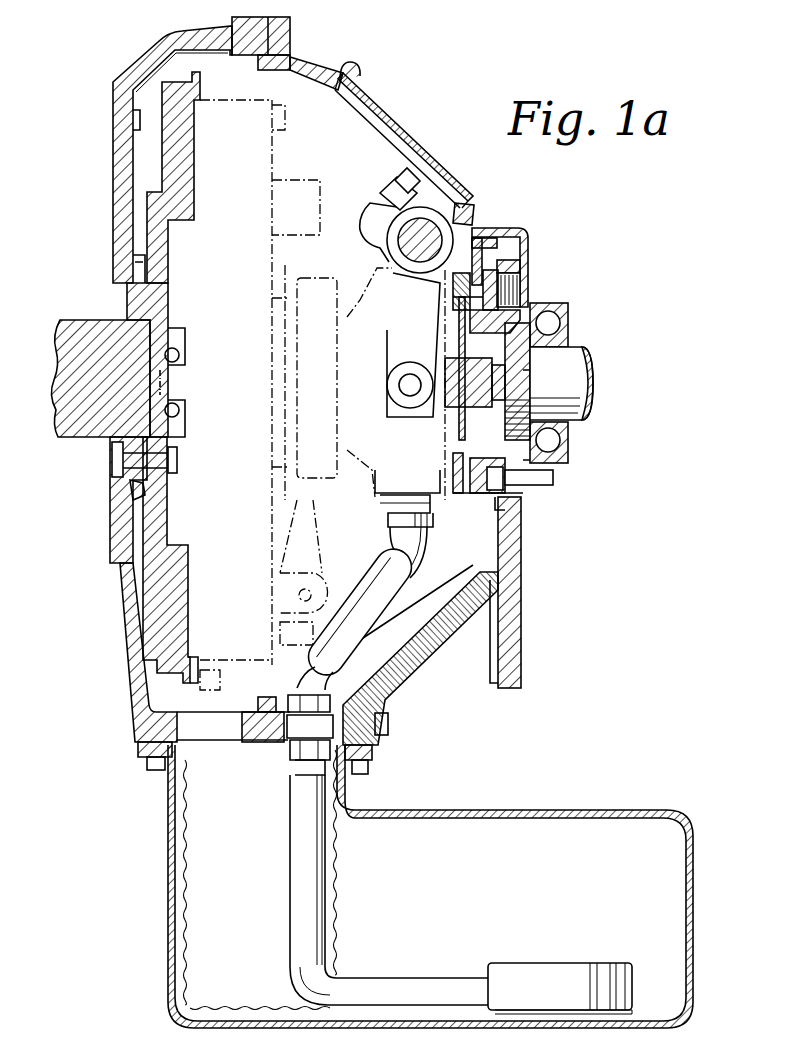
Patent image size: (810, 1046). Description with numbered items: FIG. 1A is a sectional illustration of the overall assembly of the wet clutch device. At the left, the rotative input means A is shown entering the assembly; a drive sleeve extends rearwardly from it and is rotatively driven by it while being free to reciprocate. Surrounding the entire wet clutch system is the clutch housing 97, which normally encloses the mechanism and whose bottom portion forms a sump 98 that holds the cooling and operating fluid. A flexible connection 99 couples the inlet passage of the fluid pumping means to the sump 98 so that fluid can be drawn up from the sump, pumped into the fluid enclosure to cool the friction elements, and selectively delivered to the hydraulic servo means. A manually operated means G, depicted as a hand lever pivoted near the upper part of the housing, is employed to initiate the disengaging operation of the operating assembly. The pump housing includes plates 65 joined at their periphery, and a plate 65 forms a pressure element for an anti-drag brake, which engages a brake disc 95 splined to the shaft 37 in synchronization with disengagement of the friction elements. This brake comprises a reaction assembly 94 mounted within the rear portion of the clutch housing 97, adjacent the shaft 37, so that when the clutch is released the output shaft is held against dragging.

The rotative input means A is at (78, 312).
The manually operated means G is at (394, 298).
The shaft 37 is at (588, 366).
The plates 65 is at (447, 502).
The reaction assembly 94 is at (536, 290).
The brake disc 95 is at (449, 452).
The clutch housing 97 is at (382, 107).
The sump 98 is at (394, 812).
The flexible connection 99 is at (395, 540).